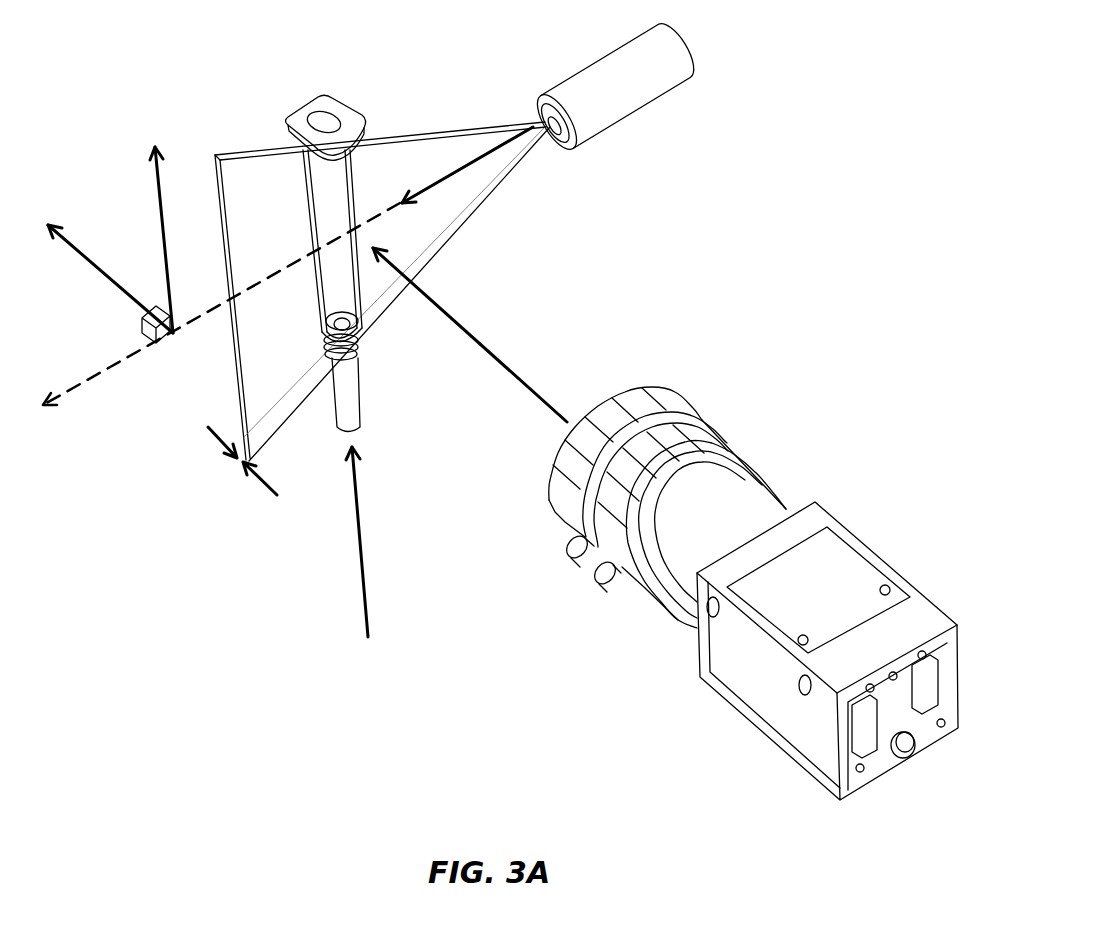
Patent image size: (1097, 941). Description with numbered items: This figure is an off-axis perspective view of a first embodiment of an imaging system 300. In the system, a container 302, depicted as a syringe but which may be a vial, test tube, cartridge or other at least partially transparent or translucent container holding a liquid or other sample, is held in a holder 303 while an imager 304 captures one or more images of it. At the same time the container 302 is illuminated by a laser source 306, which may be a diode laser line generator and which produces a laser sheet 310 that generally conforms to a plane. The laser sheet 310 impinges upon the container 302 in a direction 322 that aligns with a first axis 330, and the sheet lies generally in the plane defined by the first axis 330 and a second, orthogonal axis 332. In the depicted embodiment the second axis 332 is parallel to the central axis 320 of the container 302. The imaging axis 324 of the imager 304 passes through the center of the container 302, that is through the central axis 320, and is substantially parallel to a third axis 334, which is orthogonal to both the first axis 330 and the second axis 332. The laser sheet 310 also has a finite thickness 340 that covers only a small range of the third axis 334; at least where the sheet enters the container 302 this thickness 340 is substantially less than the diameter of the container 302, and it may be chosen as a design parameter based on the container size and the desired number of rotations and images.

The imaging system 300 is at (850, 125).
The container 302 is at (342, 105).
The holder 303 is at (360, 385).
The imager 304 is at (828, 517).
The laser source 306 is at (688, 53).
The laser sheet 310 is at (447, 250).
The central axis 320 is at (362, 558).
The direction 322 is at (472, 167).
The imaging axis 324 is at (503, 363).
The first axis 330 is at (92, 380).
The second axis 332 is at (162, 213).
The third axis 334 is at (103, 277).
The thickness 340 is at (265, 485).